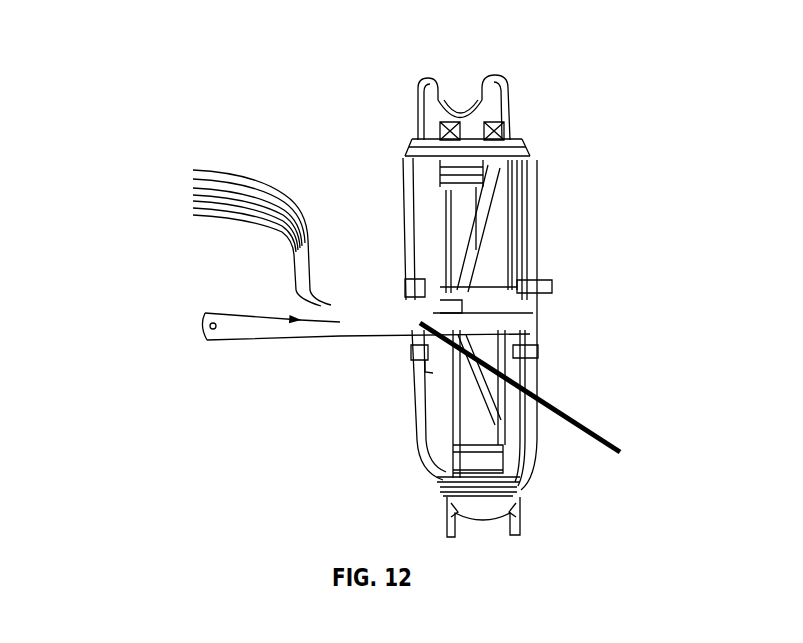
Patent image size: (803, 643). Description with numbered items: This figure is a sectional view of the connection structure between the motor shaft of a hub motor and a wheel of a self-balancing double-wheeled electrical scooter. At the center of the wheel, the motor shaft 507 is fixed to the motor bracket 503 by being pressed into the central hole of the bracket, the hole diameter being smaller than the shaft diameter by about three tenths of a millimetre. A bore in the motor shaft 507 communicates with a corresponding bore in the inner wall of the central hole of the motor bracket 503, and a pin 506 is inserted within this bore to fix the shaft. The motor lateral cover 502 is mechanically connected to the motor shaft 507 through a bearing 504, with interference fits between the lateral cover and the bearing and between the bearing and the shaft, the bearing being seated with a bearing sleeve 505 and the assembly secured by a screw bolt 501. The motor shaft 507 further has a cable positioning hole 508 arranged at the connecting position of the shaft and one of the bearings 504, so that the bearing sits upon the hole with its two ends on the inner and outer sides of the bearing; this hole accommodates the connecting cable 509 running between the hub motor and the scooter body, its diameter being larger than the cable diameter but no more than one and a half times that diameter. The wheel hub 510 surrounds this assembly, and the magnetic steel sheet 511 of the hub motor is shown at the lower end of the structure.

The screw bolt 501 is at (417, 148).
The motor lateral cover 502 is at (392, 195).
The motor bracket 503 is at (492, 218).
The bearing 504 is at (407, 287).
The bearing sleeve 505 is at (412, 354).
The pin 506 is at (446, 308).
The motor shaft 507 is at (442, 301).
The cable positioning hole 508 is at (549, 397).
The connecting cable 509 is at (290, 253).
The wheel hub 510 is at (418, 93).
The magnetic steel sheet 511 is at (450, 480).